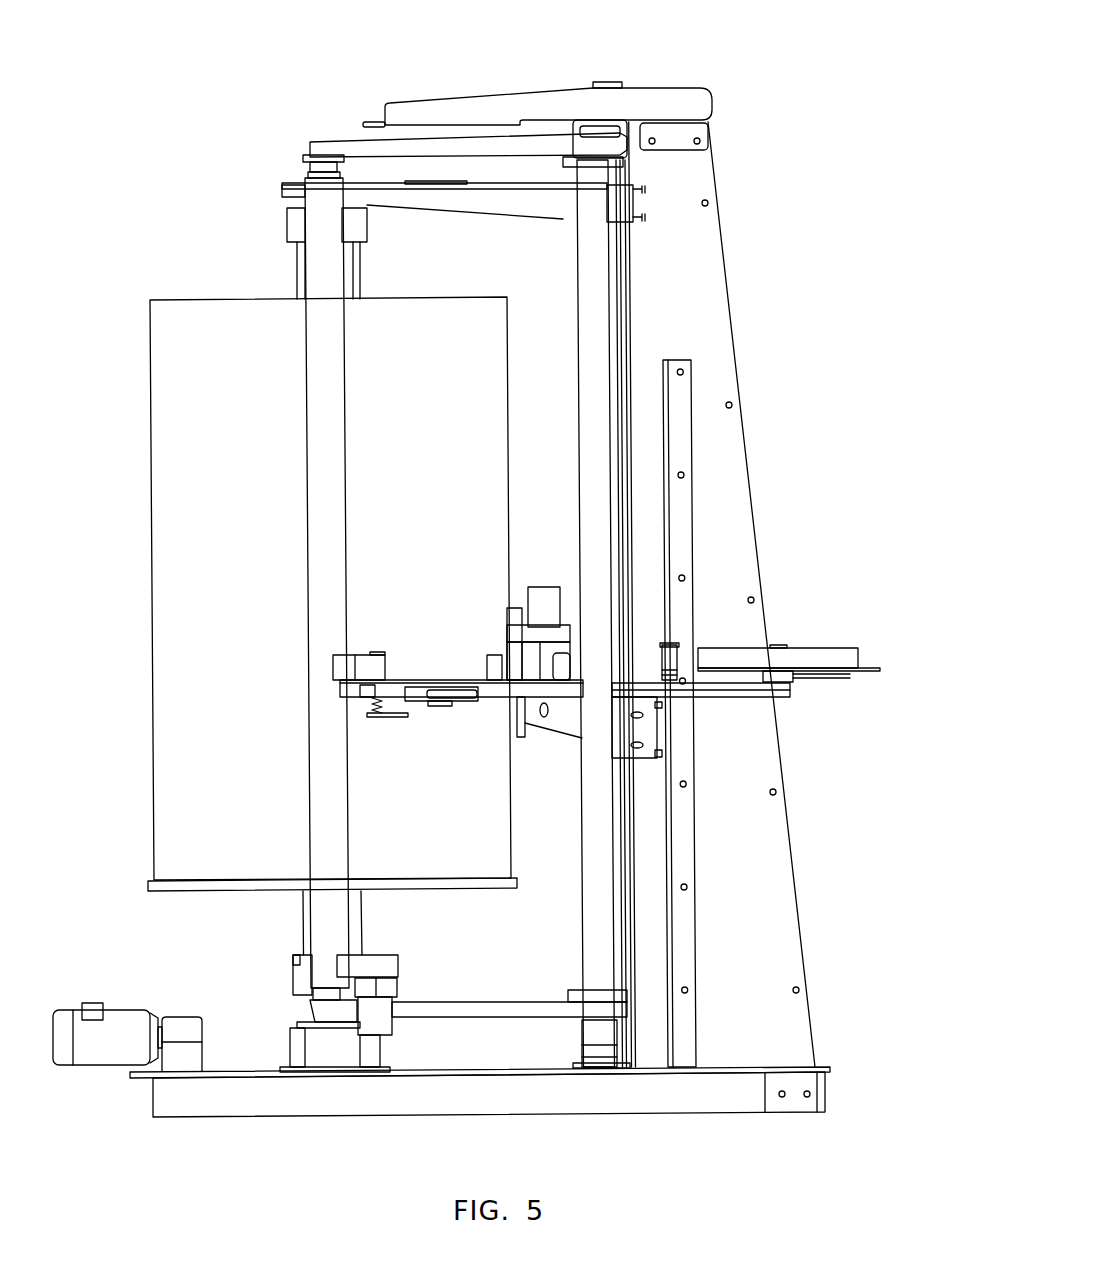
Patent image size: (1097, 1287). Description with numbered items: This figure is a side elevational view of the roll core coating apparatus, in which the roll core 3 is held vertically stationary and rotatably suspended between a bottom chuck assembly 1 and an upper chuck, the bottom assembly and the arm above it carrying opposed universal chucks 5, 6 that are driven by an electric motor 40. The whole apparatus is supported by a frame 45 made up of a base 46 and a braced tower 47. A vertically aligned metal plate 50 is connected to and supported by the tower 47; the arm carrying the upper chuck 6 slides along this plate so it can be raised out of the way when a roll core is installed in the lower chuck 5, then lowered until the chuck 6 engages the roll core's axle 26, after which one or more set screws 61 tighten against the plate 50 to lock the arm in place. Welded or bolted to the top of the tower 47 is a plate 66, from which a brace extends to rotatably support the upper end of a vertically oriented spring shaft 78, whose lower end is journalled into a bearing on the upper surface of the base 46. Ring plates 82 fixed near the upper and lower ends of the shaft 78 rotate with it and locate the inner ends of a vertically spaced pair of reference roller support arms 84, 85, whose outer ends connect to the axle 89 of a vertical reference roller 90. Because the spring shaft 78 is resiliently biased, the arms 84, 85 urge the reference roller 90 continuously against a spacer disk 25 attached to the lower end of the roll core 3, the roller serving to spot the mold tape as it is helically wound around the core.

The bottom chuck assembly 1 is at (347, 1041).
The roll core 3 is at (190, 638).
The universal chuck 5 is at (293, 975).
The universal chuck 6 is at (287, 243).
The spacer disk 25 is at (385, 880).
The axle 26 is at (357, 270).
The electric motor 40 is at (123, 1027).
The frame 45 is at (838, 1068).
The base 46 is at (398, 1100).
The braced tower 47 is at (760, 867).
The metal plate 50 is at (612, 253).
The set screws 61 is at (648, 218).
The plate 66 is at (700, 103).
The spring shaft 78 is at (597, 360).
The ring plates 82 is at (575, 159).
The reference roller support arm 84 is at (357, 150).
The reference roller support arm 85 is at (425, 1017).
The axle 89 is at (302, 170).
The vertical reference roller 90 is at (330, 497).